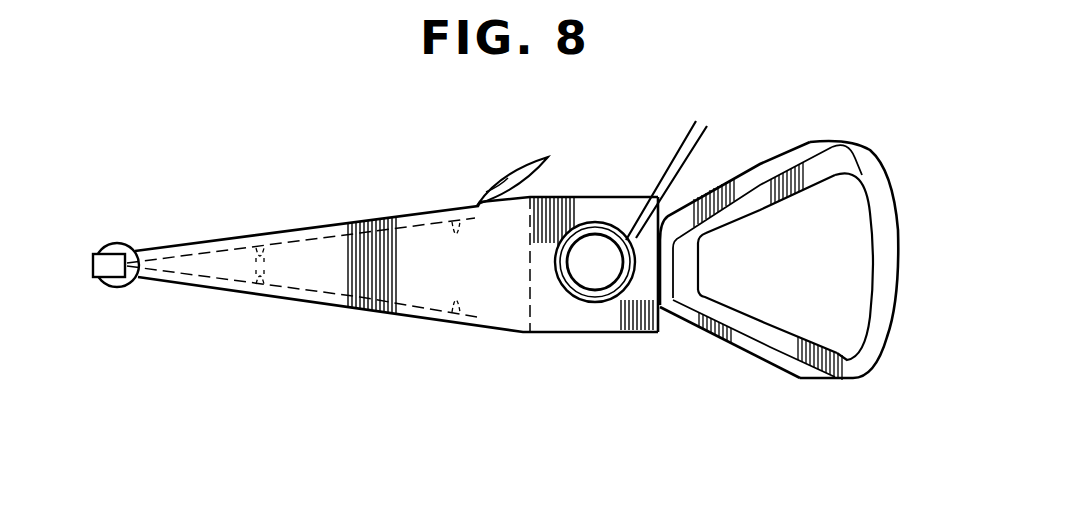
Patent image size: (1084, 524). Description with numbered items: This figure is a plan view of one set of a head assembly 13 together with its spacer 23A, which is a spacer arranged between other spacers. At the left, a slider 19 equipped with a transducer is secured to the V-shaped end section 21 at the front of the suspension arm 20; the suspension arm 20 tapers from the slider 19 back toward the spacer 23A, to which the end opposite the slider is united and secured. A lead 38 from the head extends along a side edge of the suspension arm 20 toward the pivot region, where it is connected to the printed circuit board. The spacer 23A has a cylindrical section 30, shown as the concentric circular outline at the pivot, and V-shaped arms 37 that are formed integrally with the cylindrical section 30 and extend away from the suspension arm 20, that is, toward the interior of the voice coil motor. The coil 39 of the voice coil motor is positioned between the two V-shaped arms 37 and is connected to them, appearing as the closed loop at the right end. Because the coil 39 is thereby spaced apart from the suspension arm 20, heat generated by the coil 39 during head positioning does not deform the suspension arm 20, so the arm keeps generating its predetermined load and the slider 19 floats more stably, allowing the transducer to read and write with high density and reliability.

The head assembly 13 is at (396, 208).
The slider 19 is at (110, 257).
The suspension arm 20 is at (323, 222).
The V-shaped end section 21 is at (363, 287).
The spacer 23A is at (572, 313).
The cylindrical section 30 is at (633, 233).
The V-shaped arm 37 is at (752, 172).
The lead 38 is at (513, 170).
The coil 39 is at (866, 172).